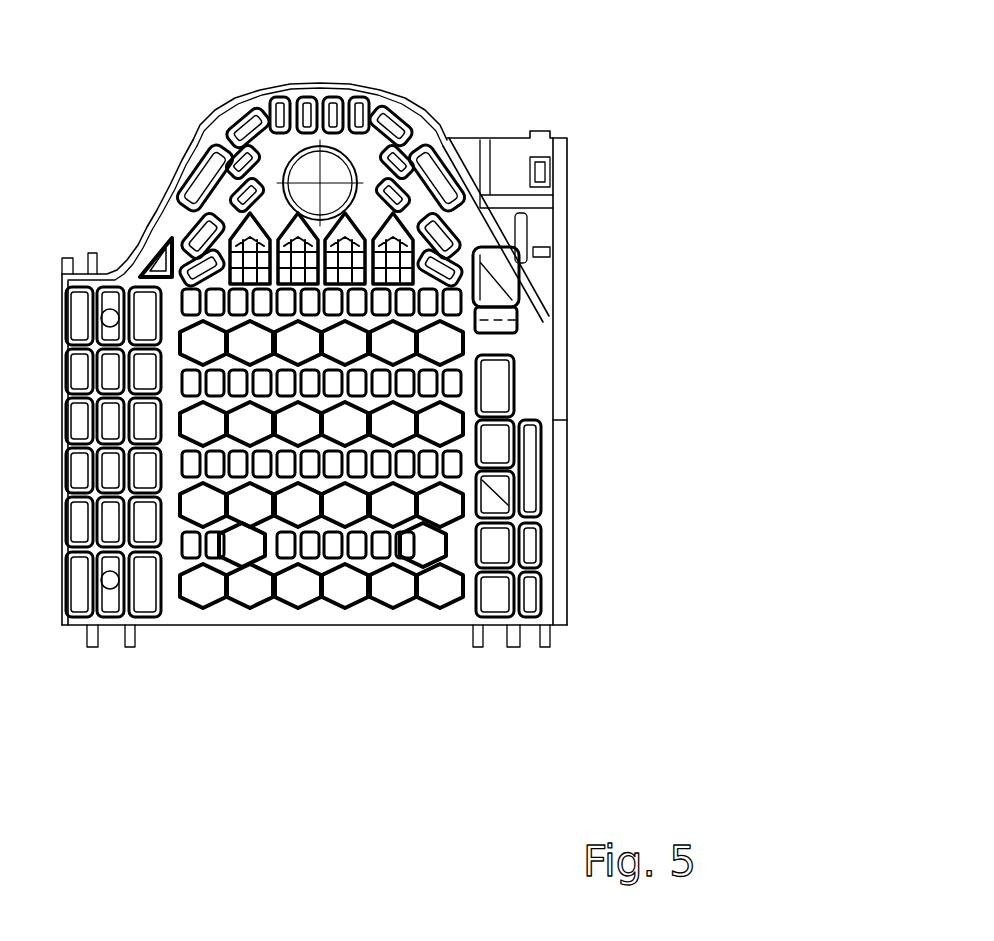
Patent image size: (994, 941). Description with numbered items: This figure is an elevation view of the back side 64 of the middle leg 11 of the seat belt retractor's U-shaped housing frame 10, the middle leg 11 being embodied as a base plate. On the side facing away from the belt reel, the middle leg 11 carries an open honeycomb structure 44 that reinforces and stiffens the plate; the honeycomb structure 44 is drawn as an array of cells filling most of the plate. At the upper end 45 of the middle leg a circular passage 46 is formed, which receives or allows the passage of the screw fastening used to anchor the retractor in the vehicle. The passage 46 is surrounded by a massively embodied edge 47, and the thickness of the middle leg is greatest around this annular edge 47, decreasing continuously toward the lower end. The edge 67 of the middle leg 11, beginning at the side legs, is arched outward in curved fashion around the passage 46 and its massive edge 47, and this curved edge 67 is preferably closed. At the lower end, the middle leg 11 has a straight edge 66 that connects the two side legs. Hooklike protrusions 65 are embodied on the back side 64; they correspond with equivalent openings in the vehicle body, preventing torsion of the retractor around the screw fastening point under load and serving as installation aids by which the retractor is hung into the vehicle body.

The housing frame 10 is at (63, 230).
The middle leg 11 is at (365, 647).
The honeycomb structure 44 is at (325, 607).
The upper end 45 is at (352, 83).
The circular passage 46 is at (334, 167).
The massive edge 47 is at (282, 157).
The back side 64 is at (172, 613).
The hooklike protrusions 65 is at (380, 358).
The straight edge 66 is at (428, 633).
The curved edge 67 is at (187, 163).